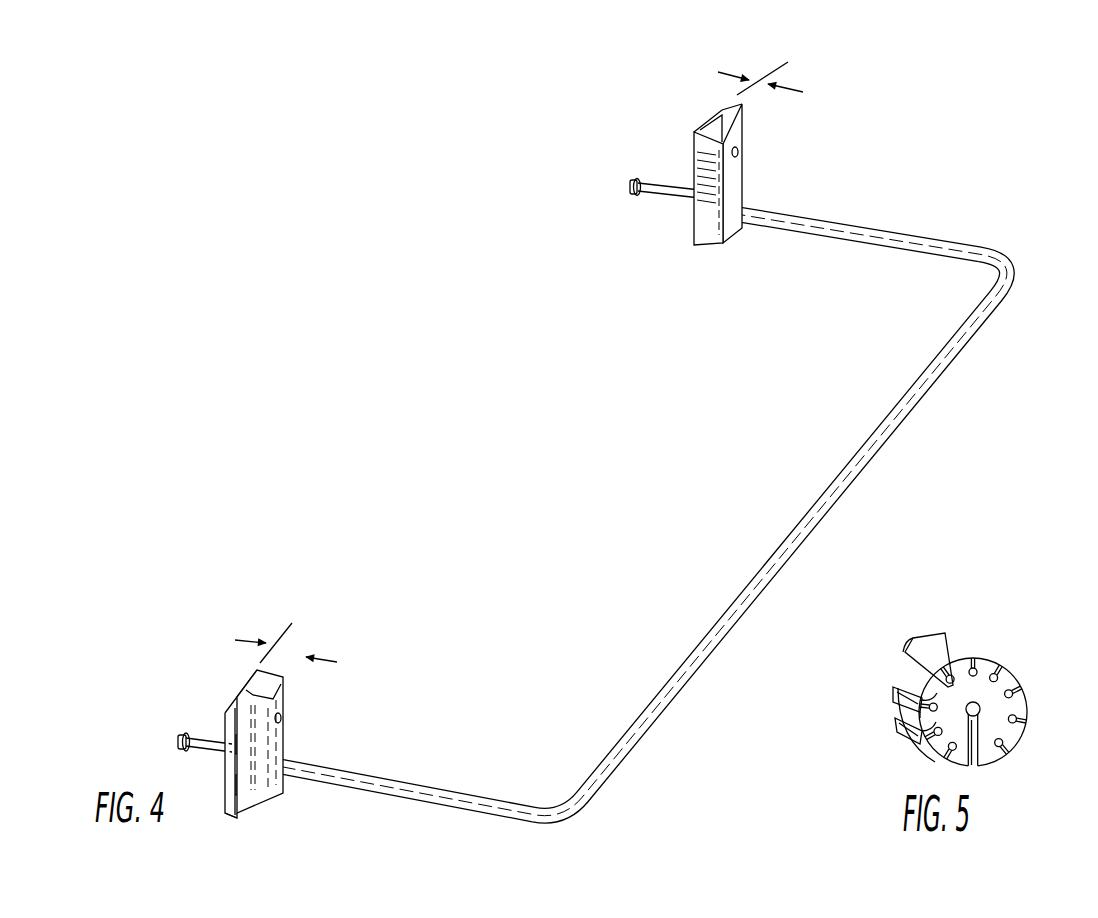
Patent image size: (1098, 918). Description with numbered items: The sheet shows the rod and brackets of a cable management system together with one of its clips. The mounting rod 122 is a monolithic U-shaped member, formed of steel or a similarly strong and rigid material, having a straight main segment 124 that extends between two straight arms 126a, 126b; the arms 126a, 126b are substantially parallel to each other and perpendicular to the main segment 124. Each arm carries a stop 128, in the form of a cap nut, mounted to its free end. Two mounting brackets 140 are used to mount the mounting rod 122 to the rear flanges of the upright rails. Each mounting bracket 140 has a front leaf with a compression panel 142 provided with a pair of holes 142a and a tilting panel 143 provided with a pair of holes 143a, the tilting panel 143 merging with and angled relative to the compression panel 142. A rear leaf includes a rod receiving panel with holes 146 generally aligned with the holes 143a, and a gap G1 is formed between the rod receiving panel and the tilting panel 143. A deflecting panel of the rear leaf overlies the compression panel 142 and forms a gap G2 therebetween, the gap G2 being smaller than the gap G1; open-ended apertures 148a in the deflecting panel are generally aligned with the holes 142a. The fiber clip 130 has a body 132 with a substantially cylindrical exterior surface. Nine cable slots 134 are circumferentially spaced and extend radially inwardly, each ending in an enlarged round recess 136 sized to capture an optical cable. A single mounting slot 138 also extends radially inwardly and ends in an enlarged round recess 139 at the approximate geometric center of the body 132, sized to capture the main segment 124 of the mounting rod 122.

In FIG. 4, the mounting rod 122 is at (637, 522).
In FIG. 4, the straight main segment 124 is at (942, 365).
In FIG. 4, the straight arm 126a is at (490, 806).
In FIG. 4, the straight arm 126b is at (900, 237).
In FIG. 4, the stop 128 is at (184, 733).
In FIG. 5, the fiber clip 130 is at (968, 691).
In FIG. 5, the body 132 is at (997, 708).
In FIG. 5, the cable slots 134 is at (893, 690).
In FIG. 5, the enlarged round recess 136 is at (952, 679).
In FIG. 5, the mounting slot 138 is at (975, 770).
In FIG. 5, the enlarged round recess 139 is at (980, 715).
In FIG. 4, the mounting bracket 140 is at (490, 454).
In FIG. 4, the compression panel 142 is at (221, 765).
In FIG. 4, the holes 142a is at (227, 796).
In FIG. 4, the tilting panel 143 is at (257, 711).
In FIG. 4, the holes 143a is at (270, 623).
In FIG. 4, the holes 146 is at (283, 722).
In FIG. 4, the open-ended apertures 148a is at (240, 788).
In FIG. 4, the gap G1 is at (286, 633).
In FIG. 4, the gap G2 is at (766, 65).